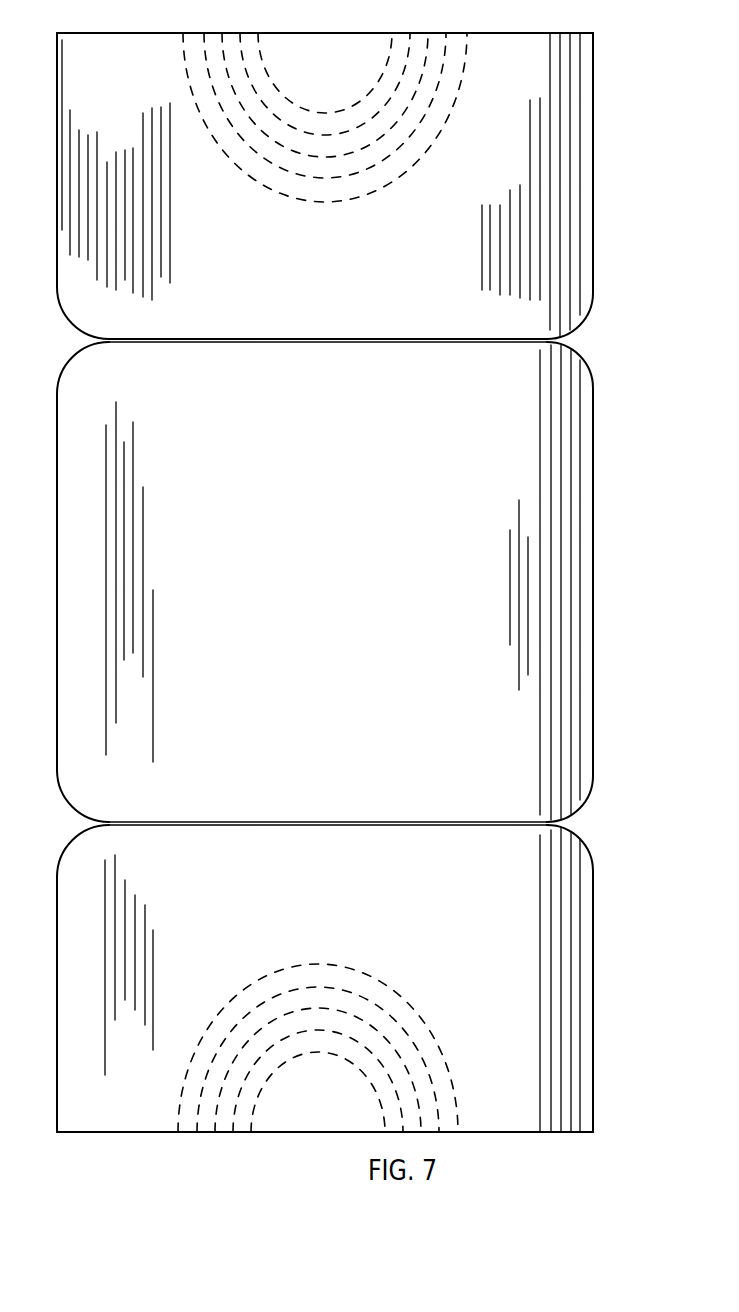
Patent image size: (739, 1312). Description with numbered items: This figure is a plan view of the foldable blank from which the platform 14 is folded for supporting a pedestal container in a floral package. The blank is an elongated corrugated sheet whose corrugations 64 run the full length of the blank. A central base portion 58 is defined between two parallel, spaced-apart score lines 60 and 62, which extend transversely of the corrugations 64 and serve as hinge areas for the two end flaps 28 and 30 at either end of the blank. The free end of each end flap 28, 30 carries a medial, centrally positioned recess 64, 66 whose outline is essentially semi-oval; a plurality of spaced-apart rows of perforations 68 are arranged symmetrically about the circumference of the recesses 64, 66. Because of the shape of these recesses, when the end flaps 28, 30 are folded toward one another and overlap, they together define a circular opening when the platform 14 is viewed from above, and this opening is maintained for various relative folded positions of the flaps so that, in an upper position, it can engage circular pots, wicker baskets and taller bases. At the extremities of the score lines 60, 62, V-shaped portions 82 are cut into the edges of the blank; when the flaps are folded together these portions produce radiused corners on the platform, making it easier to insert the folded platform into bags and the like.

The platform 14 is at (541, 558).
The end flap 28 is at (575, 985).
The end flap 30 is at (482, 62).
The base portion 58 is at (62, 520).
The score line 60 is at (326, 346).
The score line 62 is at (362, 821).
The corrugations / recess 64 is at (560, 243).
The recess 66 is at (365, 105).
The rows of perforations 68 is at (228, 152).
The V-shaped portion 82 is at (84, 338).